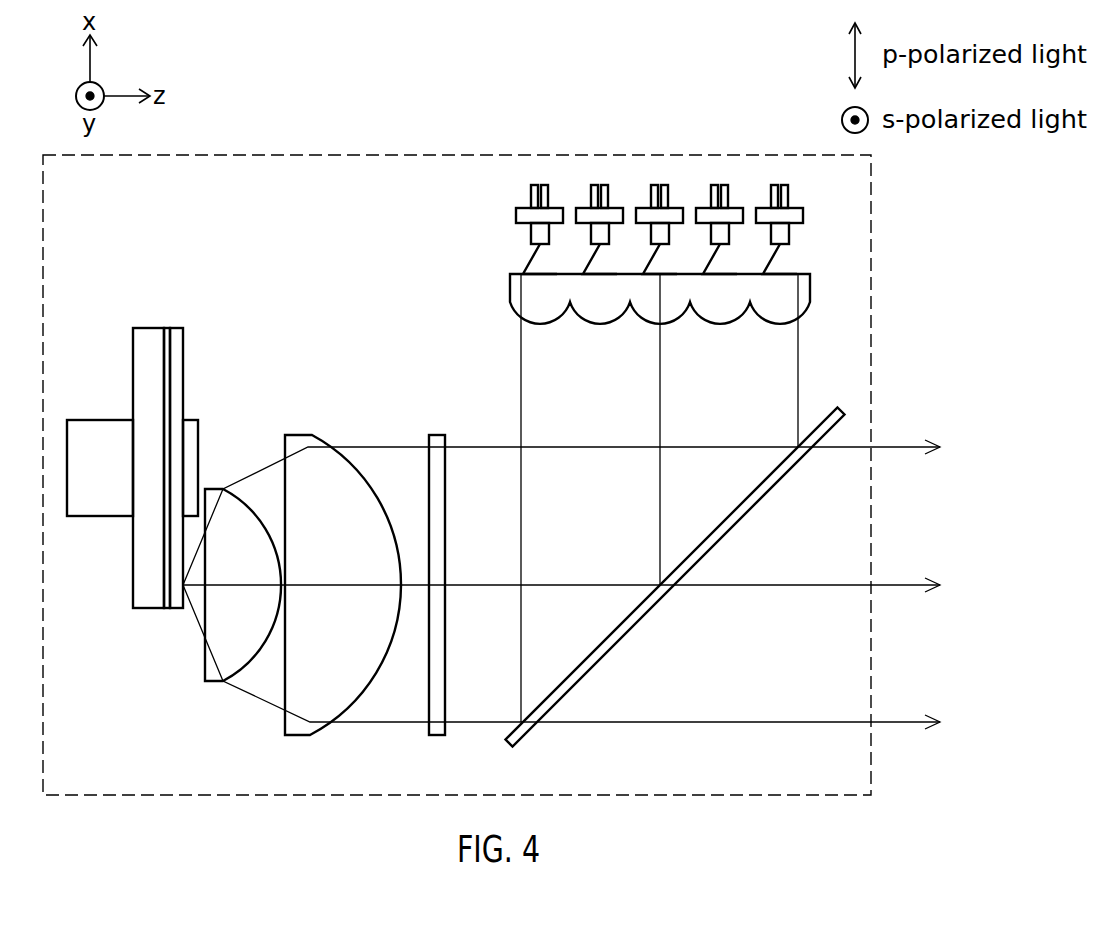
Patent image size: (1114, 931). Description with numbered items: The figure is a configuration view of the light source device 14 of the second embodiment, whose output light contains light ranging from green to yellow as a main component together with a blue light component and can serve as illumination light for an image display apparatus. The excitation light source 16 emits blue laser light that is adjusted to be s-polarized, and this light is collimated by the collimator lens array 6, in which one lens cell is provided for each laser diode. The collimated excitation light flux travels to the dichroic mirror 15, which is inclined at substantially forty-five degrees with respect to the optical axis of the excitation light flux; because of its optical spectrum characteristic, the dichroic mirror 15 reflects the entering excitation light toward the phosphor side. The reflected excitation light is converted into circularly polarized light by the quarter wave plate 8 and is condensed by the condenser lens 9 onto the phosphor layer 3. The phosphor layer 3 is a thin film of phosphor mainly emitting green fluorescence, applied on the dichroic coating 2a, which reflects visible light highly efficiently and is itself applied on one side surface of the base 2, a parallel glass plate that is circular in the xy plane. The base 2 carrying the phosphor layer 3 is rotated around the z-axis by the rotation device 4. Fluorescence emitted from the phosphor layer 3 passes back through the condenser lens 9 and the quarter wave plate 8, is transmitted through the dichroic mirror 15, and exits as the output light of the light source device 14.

The base 2 is at (145, 328).
The dichroic coating 2a is at (167, 328).
The phosphor layer 3 is at (176, 328).
The rotation device 4 is at (101, 420).
The collimator lens array 6 is at (510, 288).
The quarter wave plate 8 is at (437, 435).
The condenser lens 9 is at (215, 489).
The light source device 14 is at (748, 153).
The dichroic mirror 15 is at (836, 407).
The excitation light source 16 is at (514, 215).